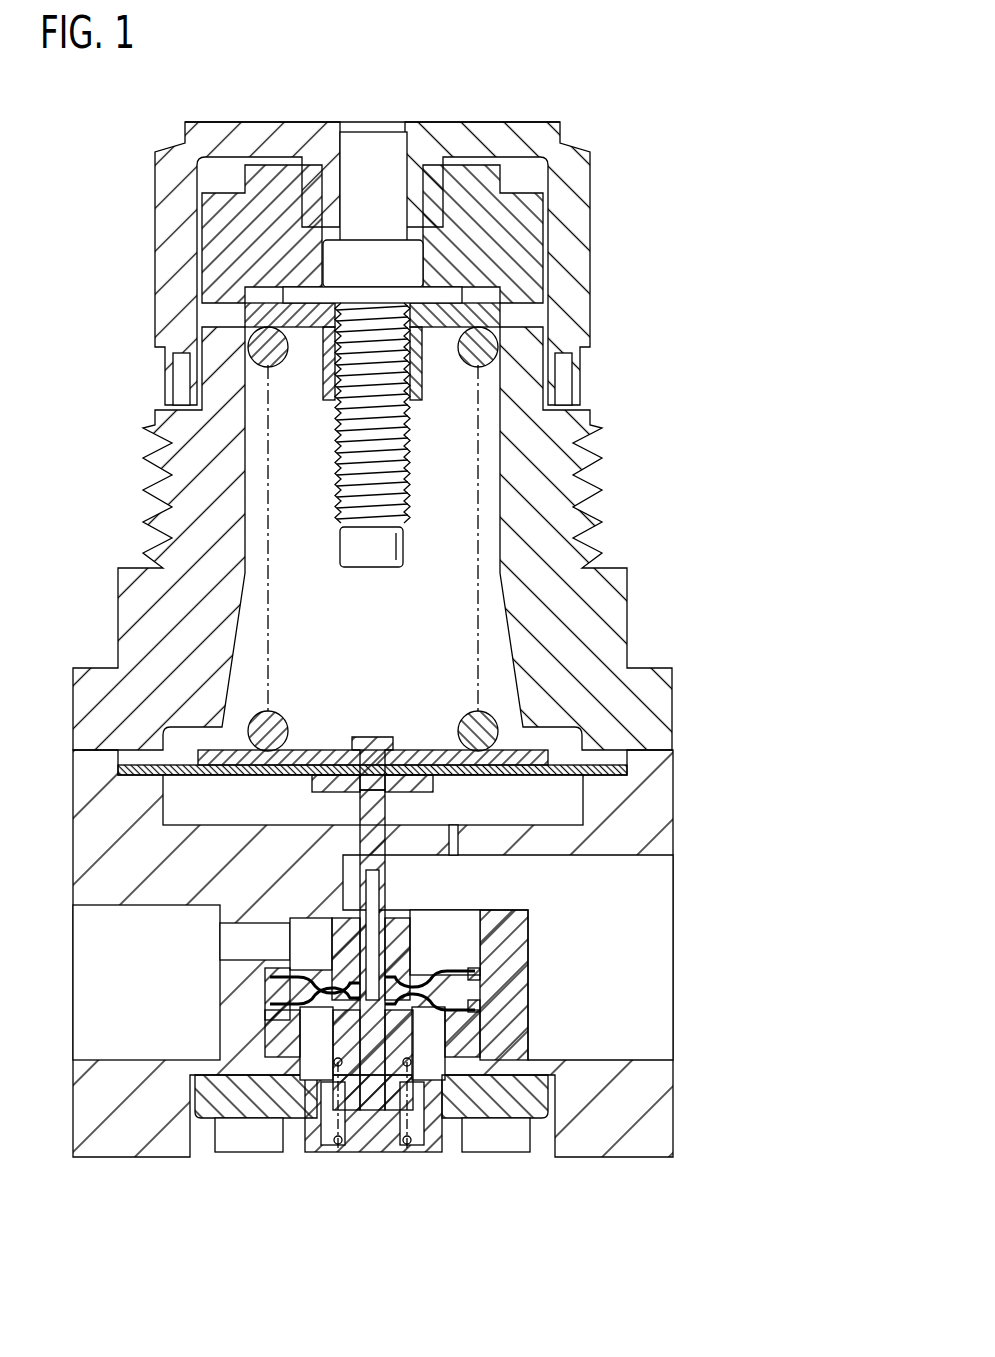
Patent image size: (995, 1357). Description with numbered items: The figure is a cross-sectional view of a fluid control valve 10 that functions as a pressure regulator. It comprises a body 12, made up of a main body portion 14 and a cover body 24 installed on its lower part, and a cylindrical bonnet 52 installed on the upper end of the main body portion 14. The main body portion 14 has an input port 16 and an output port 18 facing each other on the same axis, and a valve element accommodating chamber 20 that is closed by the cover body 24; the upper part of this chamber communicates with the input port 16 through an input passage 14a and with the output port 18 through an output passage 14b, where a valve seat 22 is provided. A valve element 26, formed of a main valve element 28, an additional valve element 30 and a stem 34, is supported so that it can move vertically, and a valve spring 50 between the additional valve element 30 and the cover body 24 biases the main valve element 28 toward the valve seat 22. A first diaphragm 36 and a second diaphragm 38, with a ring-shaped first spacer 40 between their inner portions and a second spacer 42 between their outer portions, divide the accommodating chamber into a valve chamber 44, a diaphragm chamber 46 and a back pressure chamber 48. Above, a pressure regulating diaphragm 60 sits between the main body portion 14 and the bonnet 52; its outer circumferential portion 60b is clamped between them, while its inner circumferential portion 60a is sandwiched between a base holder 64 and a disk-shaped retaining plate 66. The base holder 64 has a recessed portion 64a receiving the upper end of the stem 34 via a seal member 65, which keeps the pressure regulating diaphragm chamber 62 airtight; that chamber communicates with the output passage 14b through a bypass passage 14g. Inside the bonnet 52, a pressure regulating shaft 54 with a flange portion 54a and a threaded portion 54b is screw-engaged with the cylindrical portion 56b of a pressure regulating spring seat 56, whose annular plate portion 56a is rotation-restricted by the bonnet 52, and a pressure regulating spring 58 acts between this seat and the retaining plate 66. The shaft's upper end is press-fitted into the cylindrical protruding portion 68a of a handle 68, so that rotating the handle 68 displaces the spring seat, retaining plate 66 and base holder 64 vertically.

The fluid control valve 10 is at (623, 101).
The body 12 is at (409, 974).
The main body portion 14 is at (388, 953).
The input passage 14a is at (242, 942).
The output passage 14b is at (493, 880).
The bypass passage 14g is at (453, 827).
The input port 16 is at (93, 1033).
The output port 18 is at (658, 911).
The valve element accommodating chamber 20 is at (439, 951).
The valve seat 22 is at (403, 922).
The cover body 24 is at (247, 1113).
The valve element 26 is at (377, 995).
The main valve element 28 is at (423, 937).
The additional valve element 30 is at (420, 1052).
The stem 34 is at (362, 900).
The first diaphragm 36 is at (482, 976).
The second diaphragm 38 is at (484, 1010).
The first spacer 40 is at (332, 1012).
The second spacer 42 is at (273, 992).
The valve chamber 44 is at (308, 943).
The diaphragm chamber 46 is at (302, 987).
The back pressure chamber 48 is at (422, 1072).
The valve spring 50 is at (337, 1143).
The bonnet 52 is at (630, 640).
The pressure regulating shaft 54 is at (378, 377).
The flange portion 54a is at (445, 298).
The threaded portion 54b is at (396, 482).
The pressure regulating spring seat 56 is at (303, 366).
The plate portion 56a is at (245, 318).
The cylindrical portion 56b is at (327, 384).
The pressure regulating spring 58 is at (463, 366).
The pressure regulating diaphragm 60 is at (422, 757).
The inner circumferential portion 60a is at (419, 749).
The outer circumferential portion 60b is at (623, 776).
The pressure regulating diaphragm chamber 62 is at (567, 807).
The base holder 64 is at (330, 783).
The recessed portion 64a is at (386, 790).
The seal member 65 is at (361, 740).
The retaining plate 66 is at (310, 750).
The handle 68 is at (339, 242).
The cylindrical protruding portion 68a is at (421, 167).